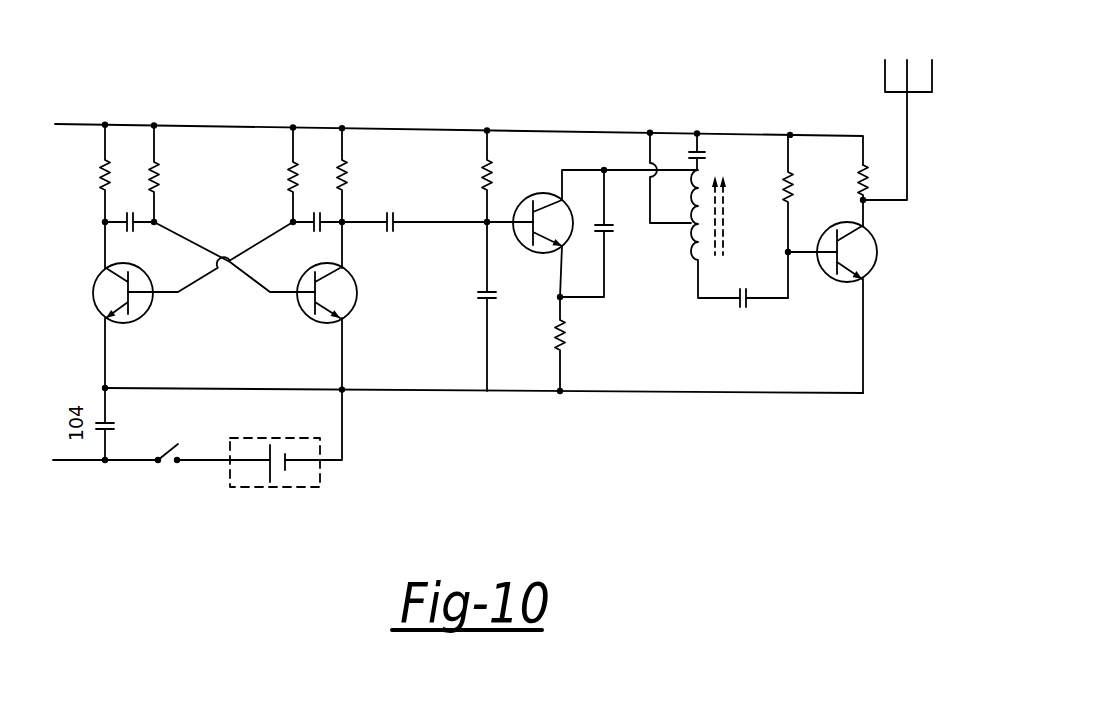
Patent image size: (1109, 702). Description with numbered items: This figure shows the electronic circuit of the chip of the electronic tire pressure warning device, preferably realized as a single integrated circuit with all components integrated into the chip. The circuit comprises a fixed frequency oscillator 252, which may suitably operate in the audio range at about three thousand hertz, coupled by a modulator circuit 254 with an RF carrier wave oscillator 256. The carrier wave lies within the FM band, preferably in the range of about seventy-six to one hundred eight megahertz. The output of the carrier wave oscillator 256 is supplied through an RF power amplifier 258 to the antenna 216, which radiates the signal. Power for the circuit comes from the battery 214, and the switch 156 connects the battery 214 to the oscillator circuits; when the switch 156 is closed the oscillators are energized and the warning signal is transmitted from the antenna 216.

The fixed frequency oscillator 252 is at (223, 170).
The modulator circuit 254 is at (437, 158).
The RF carrier wave oscillator 256 is at (608, 152).
The RF power amplifier 258 is at (847, 97).
The switch 156 is at (172, 452).
The battery 214 is at (288, 458).
The antenna 216 is at (912, 98).